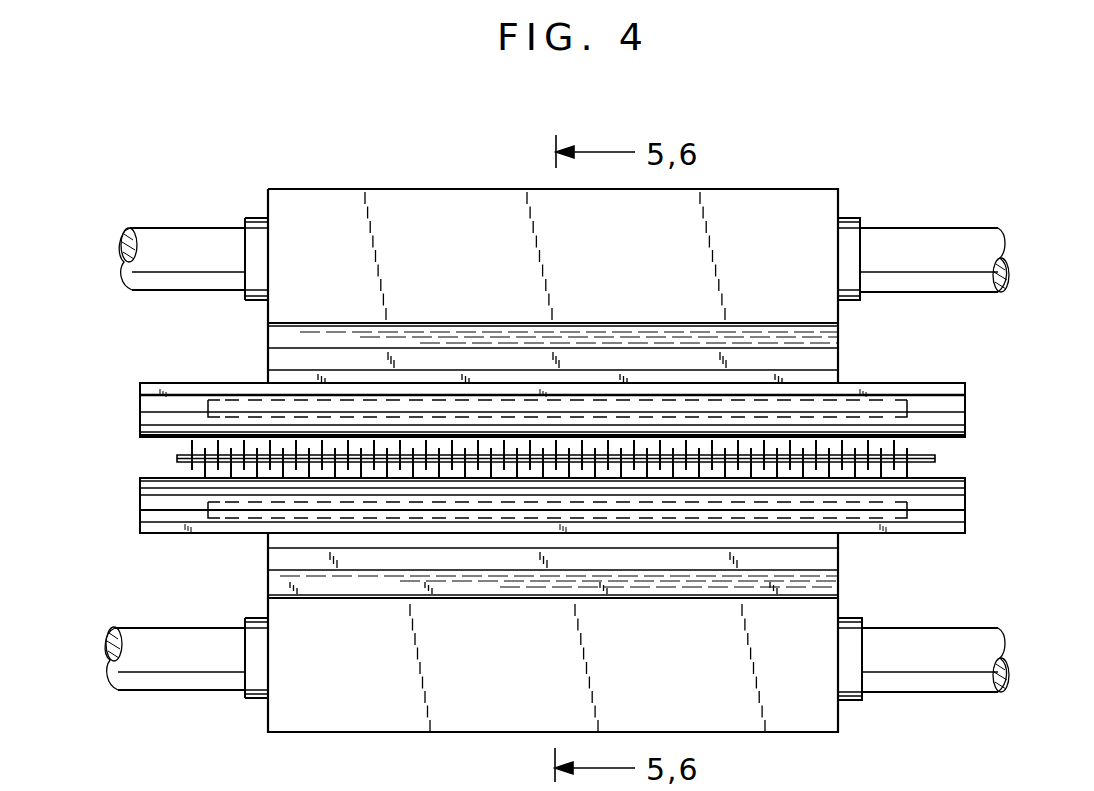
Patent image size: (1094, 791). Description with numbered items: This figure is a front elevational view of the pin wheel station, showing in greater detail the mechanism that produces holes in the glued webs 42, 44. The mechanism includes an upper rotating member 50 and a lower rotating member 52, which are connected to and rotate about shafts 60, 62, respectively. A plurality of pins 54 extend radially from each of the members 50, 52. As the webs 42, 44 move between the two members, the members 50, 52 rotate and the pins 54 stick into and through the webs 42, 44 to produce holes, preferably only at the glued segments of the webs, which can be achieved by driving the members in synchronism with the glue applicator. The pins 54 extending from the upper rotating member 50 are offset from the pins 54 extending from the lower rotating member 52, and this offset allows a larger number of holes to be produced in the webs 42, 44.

The web 42 is at (177, 457).
The web 44 is at (175, 463).
The upper rotating member 50 is at (958, 416).
The lower rotating member 52 is at (958, 501).
The pins 54 is at (908, 472).
The shaft 60 is at (990, 245).
The shaft 62 is at (988, 648).